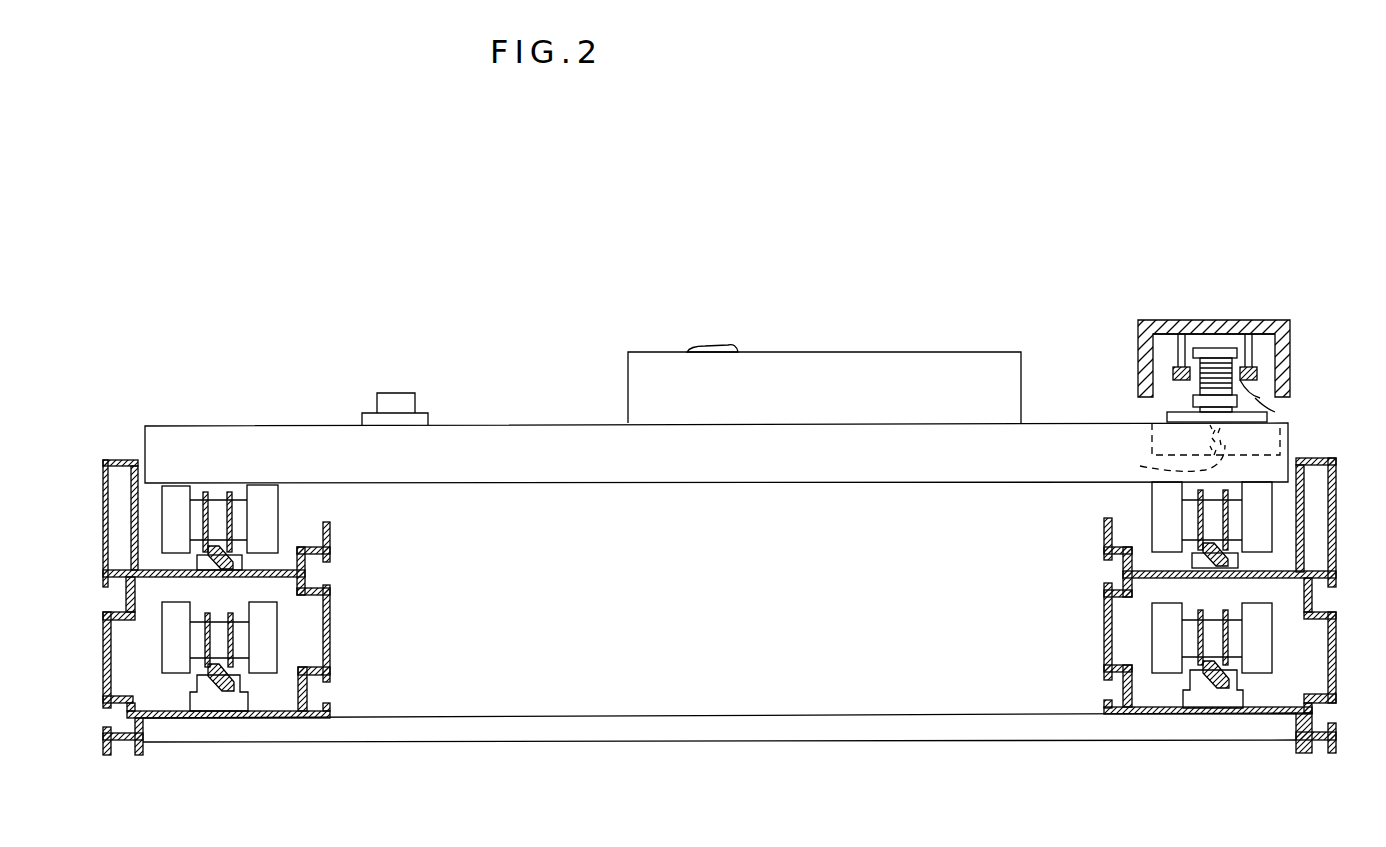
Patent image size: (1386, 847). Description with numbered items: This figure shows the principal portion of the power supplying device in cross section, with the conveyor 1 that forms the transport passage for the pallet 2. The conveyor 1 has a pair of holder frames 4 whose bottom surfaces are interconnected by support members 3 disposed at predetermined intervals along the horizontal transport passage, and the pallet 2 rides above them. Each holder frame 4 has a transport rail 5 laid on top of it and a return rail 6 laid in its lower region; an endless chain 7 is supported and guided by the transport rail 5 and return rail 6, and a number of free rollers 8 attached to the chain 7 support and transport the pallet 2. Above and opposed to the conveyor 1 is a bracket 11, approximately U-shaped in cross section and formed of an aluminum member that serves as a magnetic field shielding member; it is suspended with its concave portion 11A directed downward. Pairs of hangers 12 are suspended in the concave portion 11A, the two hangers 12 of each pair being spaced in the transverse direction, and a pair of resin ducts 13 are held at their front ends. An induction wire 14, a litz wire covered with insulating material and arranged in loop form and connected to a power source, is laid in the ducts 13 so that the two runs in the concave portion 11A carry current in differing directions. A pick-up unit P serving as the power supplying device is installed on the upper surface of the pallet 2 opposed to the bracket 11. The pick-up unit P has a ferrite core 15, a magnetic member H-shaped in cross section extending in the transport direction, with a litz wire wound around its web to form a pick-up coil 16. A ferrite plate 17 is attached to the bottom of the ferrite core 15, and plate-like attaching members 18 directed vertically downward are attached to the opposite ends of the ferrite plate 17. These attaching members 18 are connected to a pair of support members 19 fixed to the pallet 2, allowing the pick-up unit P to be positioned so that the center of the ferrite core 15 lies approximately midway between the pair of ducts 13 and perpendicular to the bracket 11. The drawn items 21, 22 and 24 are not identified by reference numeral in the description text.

The conveyor 1 is at (1341, 472).
The pallet 2 is at (237, 426).
The support member 3 is at (720, 733).
The holder frame 4 is at (103, 668).
The transport rail 5 is at (213, 567).
The return rail 6 is at (225, 692).
The endless chain 7 is at (217, 518).
The free roller 8 is at (170, 505).
The bracket 11 is at (1263, 320).
The concave portion 11A is at (1212, 335).
The hanger 12 is at (1178, 345).
The duct 13 is at (1252, 375).
The induction wire 14 is at (1252, 393).
The ferrite core 15 is at (1203, 352).
The pick-up coil 16 is at (1200, 385).
The ferrite plate 17 is at (1167, 417).
The attaching member 18 is at (1152, 442).
The support member 19 is at (1169, 465).
The workpiece 21 is at (904, 362).
The sensor 22 is at (728, 343).
The projection 24 is at (408, 395).
The pick-up unit P is at (1275, 412).